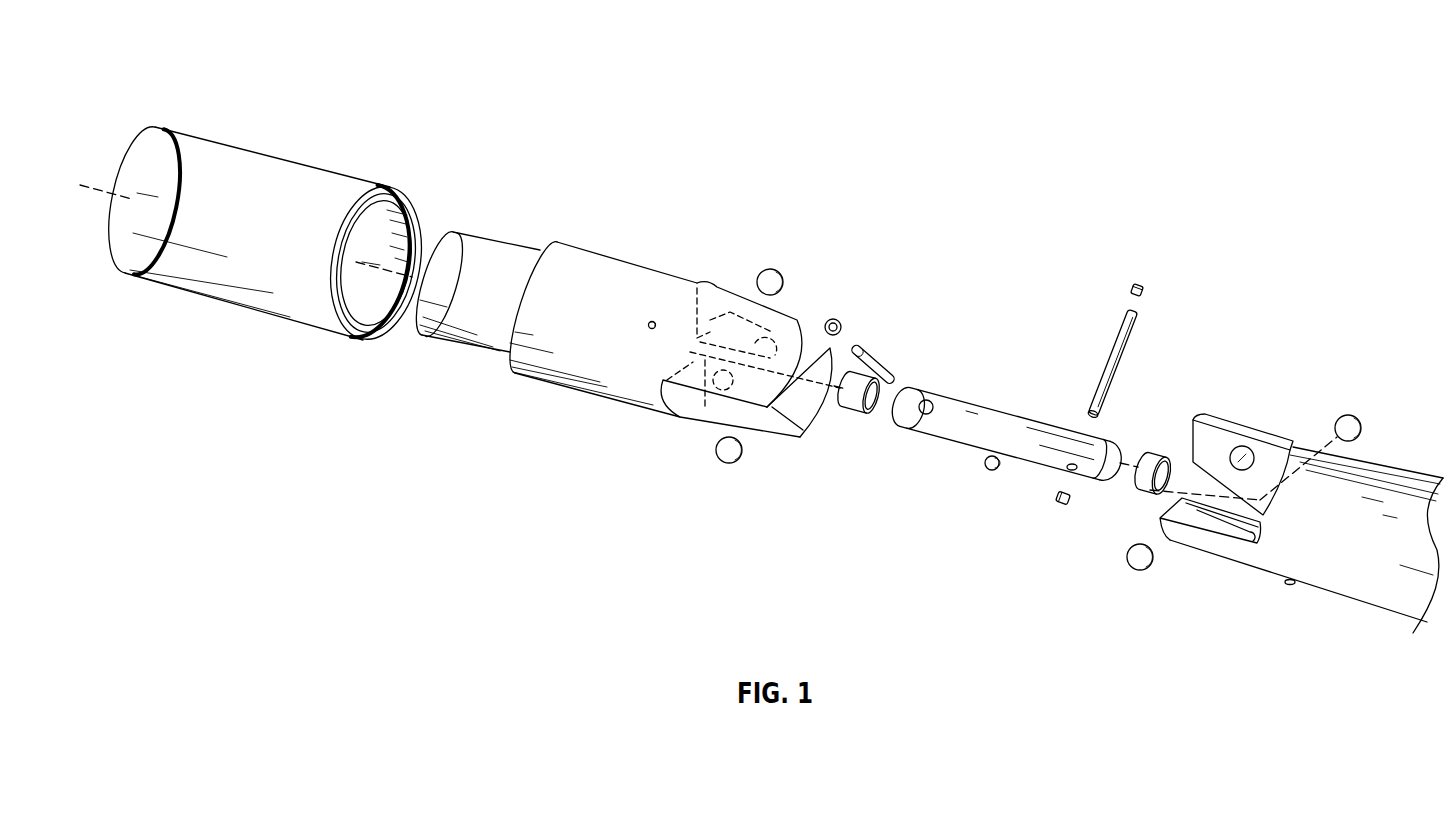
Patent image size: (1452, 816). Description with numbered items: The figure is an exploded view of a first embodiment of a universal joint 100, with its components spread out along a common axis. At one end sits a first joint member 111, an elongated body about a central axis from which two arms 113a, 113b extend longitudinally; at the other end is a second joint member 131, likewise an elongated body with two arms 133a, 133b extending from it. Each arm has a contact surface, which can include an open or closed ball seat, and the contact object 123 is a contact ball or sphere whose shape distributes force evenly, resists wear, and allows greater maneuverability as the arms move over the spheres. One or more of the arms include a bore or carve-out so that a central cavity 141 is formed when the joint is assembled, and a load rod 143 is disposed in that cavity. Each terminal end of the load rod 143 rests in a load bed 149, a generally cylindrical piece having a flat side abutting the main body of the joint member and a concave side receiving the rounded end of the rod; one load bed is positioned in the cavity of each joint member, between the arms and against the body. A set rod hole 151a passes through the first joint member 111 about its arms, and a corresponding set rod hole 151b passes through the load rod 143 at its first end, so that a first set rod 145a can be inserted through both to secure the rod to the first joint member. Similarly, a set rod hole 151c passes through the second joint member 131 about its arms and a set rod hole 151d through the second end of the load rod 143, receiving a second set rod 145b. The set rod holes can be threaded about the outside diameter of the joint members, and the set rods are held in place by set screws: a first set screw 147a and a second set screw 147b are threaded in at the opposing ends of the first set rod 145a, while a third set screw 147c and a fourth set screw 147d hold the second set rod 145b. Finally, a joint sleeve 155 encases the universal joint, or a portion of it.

The universal joint 100 is at (208, 53).
The joint sleeve 155 is at (227, 158).
The first joint member 111 is at (582, 264).
The arm 113a is at (745, 300).
The arm 113b is at (713, 415).
The set rod hole 151a is at (652, 320).
The contact object 123 is at (771, 269).
The first set screw 147a is at (836, 319).
The second set screw 147b is at (985, 470).
The third set screw 147c is at (1137, 283).
The fourth set screw 147d is at (1055, 505).
The first set rod 145a is at (882, 345).
The second set rod 145b is at (1119, 328).
The set rod hole 151b is at (929, 400).
The load rod 143 is at (997, 428).
The load bed 149 is at (847, 408).
The central cavity 141 is at (1203, 478).
The set rod hole 151c is at (1288, 588).
The set rod hole 151d is at (1074, 474).
The arm 133a is at (1230, 426).
The arm 133b is at (1200, 548).
The second joint member 131 is at (1365, 586).